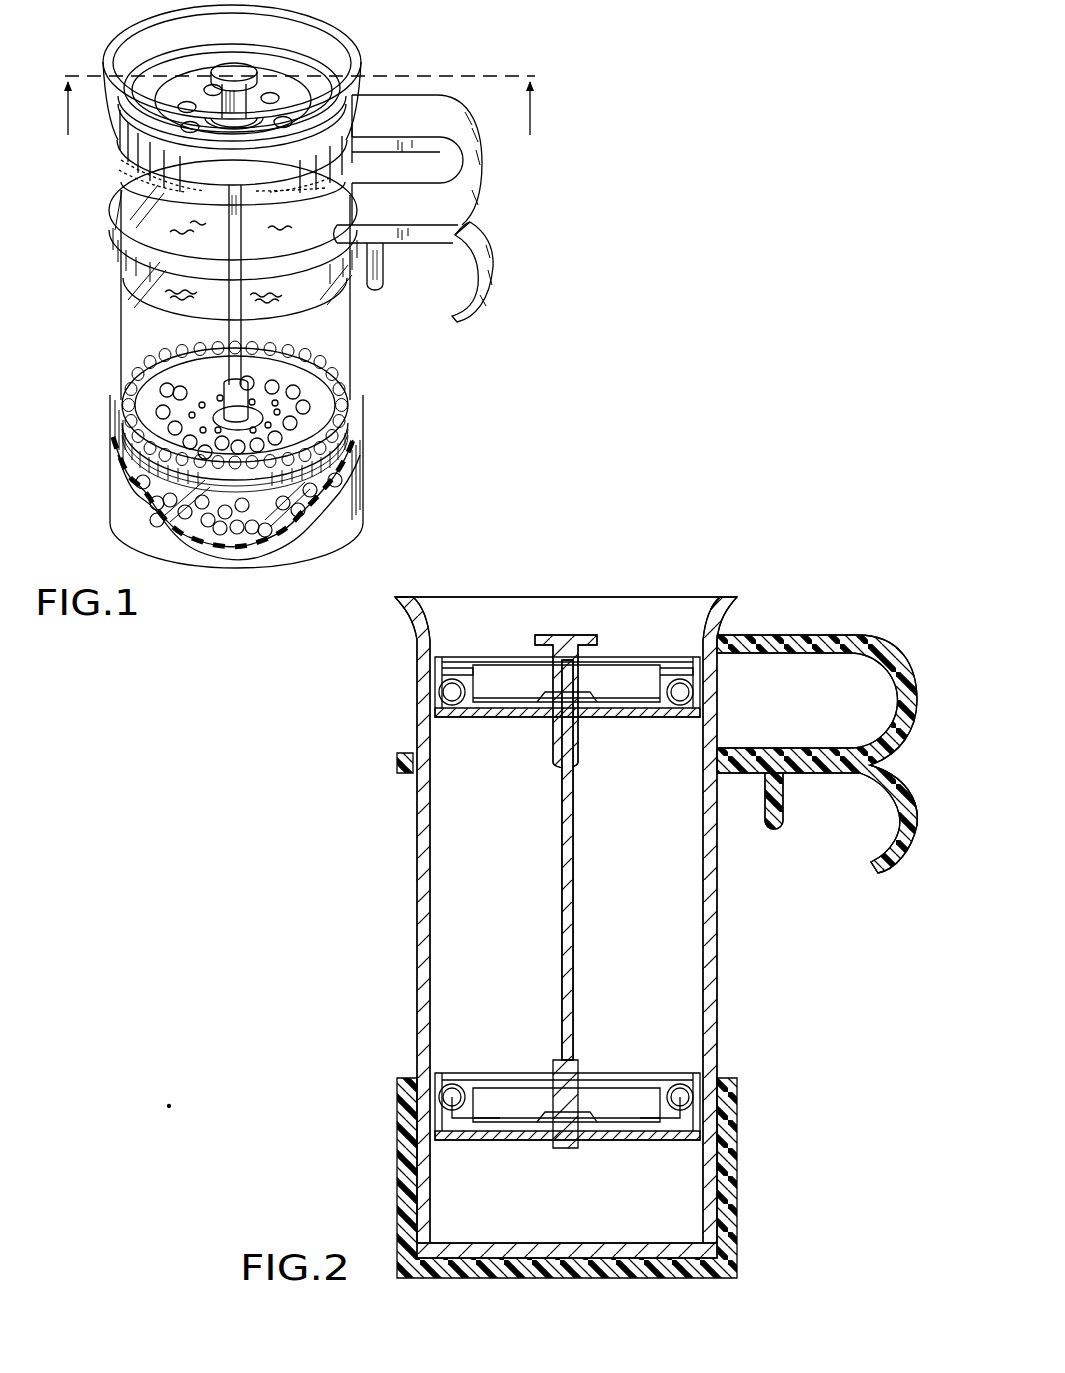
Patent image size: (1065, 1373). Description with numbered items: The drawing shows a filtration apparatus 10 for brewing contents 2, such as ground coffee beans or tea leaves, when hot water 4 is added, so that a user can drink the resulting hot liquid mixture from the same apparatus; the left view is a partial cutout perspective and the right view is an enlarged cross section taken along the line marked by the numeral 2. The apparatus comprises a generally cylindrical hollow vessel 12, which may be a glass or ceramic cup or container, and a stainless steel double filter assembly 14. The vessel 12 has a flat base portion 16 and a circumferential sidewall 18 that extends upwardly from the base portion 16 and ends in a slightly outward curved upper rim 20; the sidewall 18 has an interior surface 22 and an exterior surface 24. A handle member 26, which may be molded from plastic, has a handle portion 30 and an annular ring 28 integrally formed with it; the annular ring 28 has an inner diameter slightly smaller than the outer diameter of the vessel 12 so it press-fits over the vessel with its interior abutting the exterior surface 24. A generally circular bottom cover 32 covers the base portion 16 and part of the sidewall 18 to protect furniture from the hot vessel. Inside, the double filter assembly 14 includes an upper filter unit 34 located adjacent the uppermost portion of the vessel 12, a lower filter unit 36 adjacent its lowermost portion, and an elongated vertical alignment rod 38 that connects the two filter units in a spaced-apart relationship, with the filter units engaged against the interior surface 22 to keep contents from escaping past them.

In FIG. 1, the contents 2 is at (220, 600).
In FIG. 1, the hot water 4 is at (303, 296).
In FIG. 1, the filtration apparatus 10 is at (448, 47).
In FIG. 2, the filtration apparatus 10 is at (772, 530).
In FIG. 1, the vessel 12 is at (115, 345).
In FIG. 2, the vessel 12 is at (565, 927).
In FIG. 2, the double filter assembly 14 is at (590, 584).
In FIG. 2, the base portion 16 is at (612, 1178).
In FIG. 2, the circumferential sidewall 18 is at (418, 905).
In FIG. 1, the upper rim 20 is at (333, 32).
In FIG. 2, the upper rim 20 is at (727, 597).
In FIG. 2, the interior surface 22 is at (698, 875).
In FIG. 2, the exterior surface 24 is at (418, 820).
In FIG. 1, the handle member 26 is at (455, 334).
In FIG. 2, the handle member 26 is at (828, 622).
In FIG. 1, the annular ring 28 is at (112, 212).
In FIG. 2, the annular ring 28 is at (406, 760).
In FIG. 1, the handle portion 30 is at (497, 223).
In FIG. 2, the handle portion 30 is at (907, 727).
In FIG. 2, the bottom cover 32 is at (725, 1163).
In FIG. 2, the upper filter unit 34 is at (488, 724).
In FIG. 2, the lower filter unit 36 is at (466, 1153).
In FIG. 2, the vertical alignment rod 38 is at (572, 882).